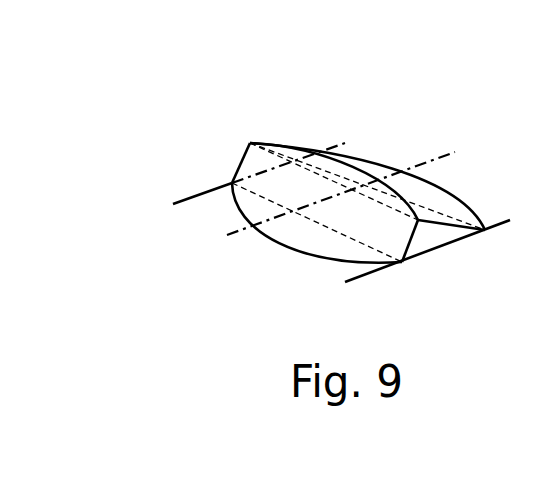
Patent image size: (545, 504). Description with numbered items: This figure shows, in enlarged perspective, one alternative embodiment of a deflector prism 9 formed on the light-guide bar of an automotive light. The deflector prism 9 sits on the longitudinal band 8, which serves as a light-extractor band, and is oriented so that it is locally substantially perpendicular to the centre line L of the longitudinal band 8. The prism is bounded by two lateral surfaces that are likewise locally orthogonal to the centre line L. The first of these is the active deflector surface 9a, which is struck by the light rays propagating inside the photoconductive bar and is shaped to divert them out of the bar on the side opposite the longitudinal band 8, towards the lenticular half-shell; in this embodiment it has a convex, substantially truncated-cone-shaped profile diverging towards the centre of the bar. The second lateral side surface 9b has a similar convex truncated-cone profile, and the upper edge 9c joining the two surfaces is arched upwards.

The longitudinal band 8 is at (212, 210).
The deflector prism 9 is at (436, 238).
The active deflector surface 9a is at (308, 233).
The second lateral side surface 9b is at (378, 183).
The upper edge 9c is at (320, 157).
The centre line L is at (354, 185).